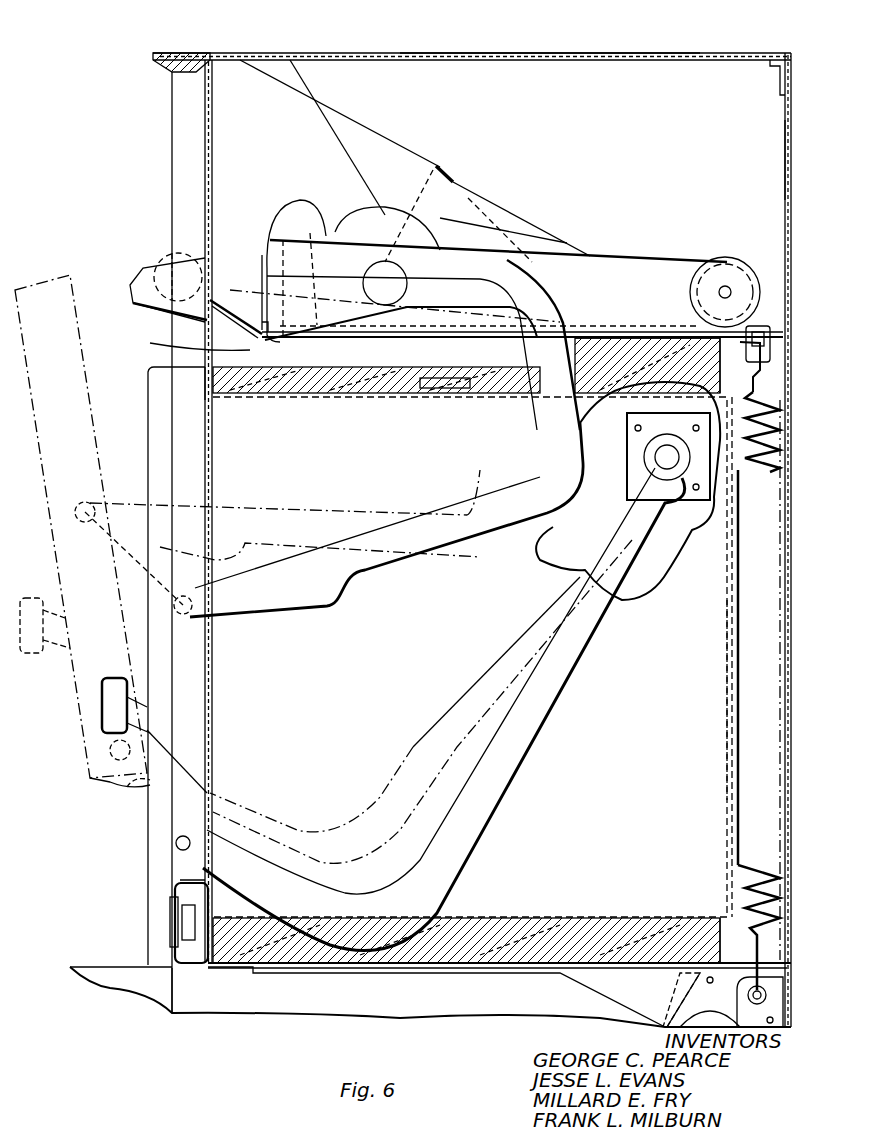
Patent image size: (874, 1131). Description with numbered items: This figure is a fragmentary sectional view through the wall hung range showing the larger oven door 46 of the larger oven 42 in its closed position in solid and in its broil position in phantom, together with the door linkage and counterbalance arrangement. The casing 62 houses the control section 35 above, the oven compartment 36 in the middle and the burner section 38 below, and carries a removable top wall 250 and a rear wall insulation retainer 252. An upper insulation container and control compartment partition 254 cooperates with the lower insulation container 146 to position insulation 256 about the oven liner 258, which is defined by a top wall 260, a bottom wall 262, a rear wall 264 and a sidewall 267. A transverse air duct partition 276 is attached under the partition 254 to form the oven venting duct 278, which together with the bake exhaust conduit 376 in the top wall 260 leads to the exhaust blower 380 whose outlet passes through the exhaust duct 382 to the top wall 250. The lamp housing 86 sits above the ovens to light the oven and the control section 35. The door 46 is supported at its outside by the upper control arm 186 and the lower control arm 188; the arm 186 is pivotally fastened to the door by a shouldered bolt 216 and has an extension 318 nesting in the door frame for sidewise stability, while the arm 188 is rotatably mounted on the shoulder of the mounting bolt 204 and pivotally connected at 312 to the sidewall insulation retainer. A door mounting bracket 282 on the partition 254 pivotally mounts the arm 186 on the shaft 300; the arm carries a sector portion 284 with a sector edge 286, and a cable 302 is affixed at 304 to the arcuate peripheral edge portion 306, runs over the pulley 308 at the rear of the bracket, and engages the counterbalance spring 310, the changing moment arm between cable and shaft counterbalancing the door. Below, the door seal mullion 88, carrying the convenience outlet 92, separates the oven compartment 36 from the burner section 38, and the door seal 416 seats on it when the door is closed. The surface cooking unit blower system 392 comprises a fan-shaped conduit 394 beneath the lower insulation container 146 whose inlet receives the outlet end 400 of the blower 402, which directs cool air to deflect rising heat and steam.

The control section 35 is at (672, 100).
The oven compartment 36 is at (746, 608).
The burner section 38 is at (497, 1000).
The larger oven 42 is at (205, 482).
The larger oven door 46 is at (148, 376).
The casing 62 is at (290, 57).
The lamp housing 86 is at (150, 254).
The door seal mullion 88 is at (178, 957).
The electrical convenience outlet 92 is at (172, 920).
The lower insulation container 146 is at (235, 968).
The outside upper control arm 186 is at (372, 568).
The outside lower control arm 188 is at (498, 783).
The control arm mounting bolt 204 is at (115, 750).
The shouldered bolt 216 is at (88, 503).
The removable top wall 250 is at (505, 57).
The rear wall insulation retainer 252 is at (785, 152).
The upper insulation container and control compartment partition 254 is at (618, 333).
The insulation 256 is at (350, 393).
The oven liner 258 is at (205, 380).
The top wall of oven liner 260 is at (258, 397).
The bottom wall of oven liner 262 is at (535, 918).
The rear wall of oven liner 264 is at (727, 690).
The sidewall of oven liner 267 is at (680, 757).
The transverse air duct partition 276 is at (312, 345).
The oven venting duct 278 is at (245, 351).
The door mounting bracket 282 is at (565, 243).
The sector shaped portion 284 is at (305, 236).
The sector edge 286 is at (263, 233).
The shaft 300 is at (385, 290).
The cable 302 is at (620, 252).
The cable attachment point 304 is at (262, 320).
The arcuate peripheral edge portion 306 is at (266, 262).
The pulley 308 is at (735, 263).
The counterbalance spring 310 is at (747, 470).
The pivotal connection 312 is at (663, 457).
The extension 318 is at (300, 602).
The bake exhaust conduit 376 is at (397, 398).
The exhaust blower 380 is at (478, 207).
The exhaust duct 382 is at (370, 118).
The surface cooking unit blower system 392 is at (630, 998).
The fan-shaped conduit 394 is at (320, 975).
The outlet end of blower 400 is at (678, 990).
The blower 402 is at (660, 1027).
The door seal 416 is at (140, 788).